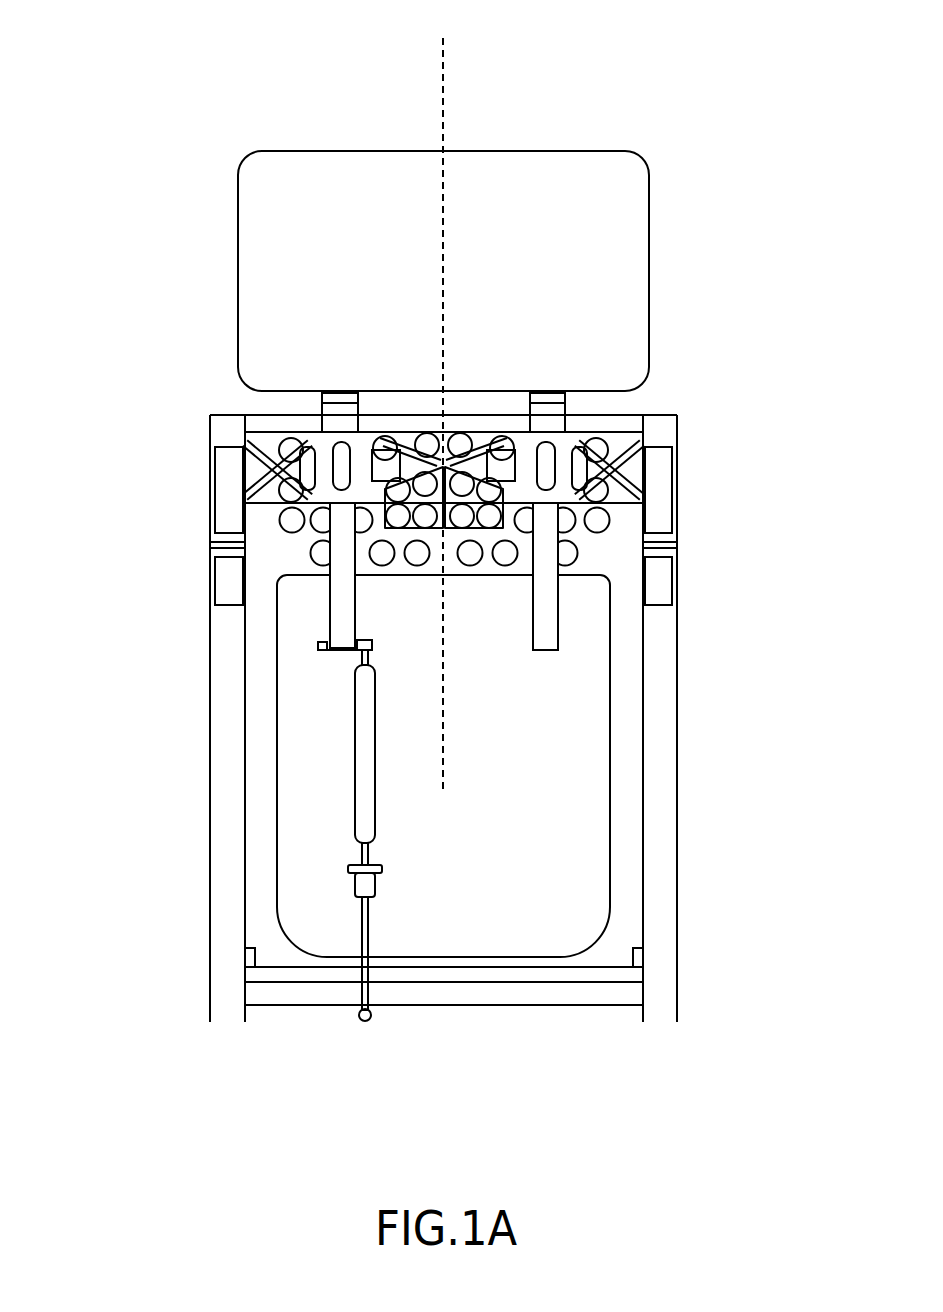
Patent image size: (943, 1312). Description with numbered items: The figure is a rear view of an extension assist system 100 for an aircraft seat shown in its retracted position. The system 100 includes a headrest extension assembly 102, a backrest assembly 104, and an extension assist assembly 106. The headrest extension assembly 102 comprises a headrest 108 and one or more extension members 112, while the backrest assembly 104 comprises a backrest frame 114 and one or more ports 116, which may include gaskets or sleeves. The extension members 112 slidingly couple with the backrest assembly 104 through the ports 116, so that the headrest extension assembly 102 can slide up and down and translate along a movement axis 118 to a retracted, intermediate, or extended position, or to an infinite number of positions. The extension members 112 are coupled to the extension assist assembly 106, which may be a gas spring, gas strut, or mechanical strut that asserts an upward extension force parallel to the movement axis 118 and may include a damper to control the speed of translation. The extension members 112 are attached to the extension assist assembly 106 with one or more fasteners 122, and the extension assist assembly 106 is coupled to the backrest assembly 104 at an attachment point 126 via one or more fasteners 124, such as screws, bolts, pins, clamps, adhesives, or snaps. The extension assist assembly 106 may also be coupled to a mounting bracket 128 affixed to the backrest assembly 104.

The extension assist system 100 is at (158, 48).
The headrest extension assembly 102 is at (469, 291).
The backrest assembly 104 is at (515, 718).
The extension assist assembly 106 is at (365, 743).
The headrest 108 is at (237, 258).
The extension members 112 is at (340, 610).
The backrest frame 114 is at (657, 645).
The ports 116 is at (322, 410).
The movement axis 118 is at (443, 90).
The fasteners 122 is at (323, 643).
The fasteners 124 is at (382, 868).
The attachment point 126 is at (370, 866).
The mounting bracket 128 is at (360, 920).